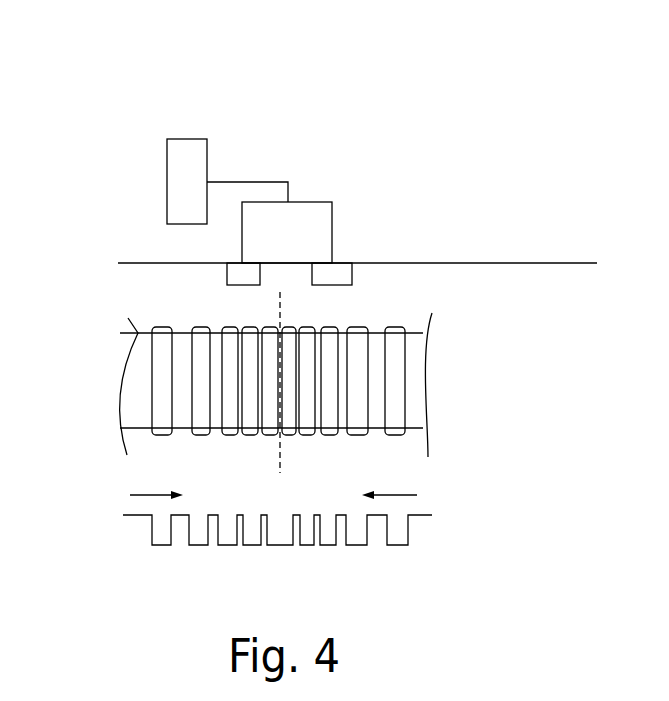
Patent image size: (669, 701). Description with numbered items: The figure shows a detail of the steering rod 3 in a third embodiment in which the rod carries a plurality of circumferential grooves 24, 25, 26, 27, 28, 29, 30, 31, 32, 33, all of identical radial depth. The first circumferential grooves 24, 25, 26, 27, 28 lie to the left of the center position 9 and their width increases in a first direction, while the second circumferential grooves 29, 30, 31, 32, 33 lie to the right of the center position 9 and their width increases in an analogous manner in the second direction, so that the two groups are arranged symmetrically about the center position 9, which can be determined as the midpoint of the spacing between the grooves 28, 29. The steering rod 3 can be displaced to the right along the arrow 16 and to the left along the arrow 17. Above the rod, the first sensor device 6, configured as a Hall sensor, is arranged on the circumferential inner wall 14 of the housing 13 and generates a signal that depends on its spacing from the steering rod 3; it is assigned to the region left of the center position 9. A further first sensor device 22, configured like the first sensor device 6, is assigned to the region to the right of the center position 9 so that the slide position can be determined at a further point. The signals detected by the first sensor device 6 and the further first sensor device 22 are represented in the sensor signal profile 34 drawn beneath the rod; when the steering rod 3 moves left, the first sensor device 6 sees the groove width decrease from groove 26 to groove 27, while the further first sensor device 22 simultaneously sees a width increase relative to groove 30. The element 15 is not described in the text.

The steering rod 3 is at (476, 138).
The first sensor device 6 is at (234, 260).
The center position 9 is at (280, 473).
The housing 13 is at (533, 263).
The circumferential inner wall 14 is at (563, 263).
The control unit 15 is at (185, 138).
The arrow 16 is at (155, 497).
The arrow 17 is at (400, 497).
The further first sensor device 22 is at (343, 263).
The first circumferential groove 24 is at (128, 318).
The first circumferential groove 25 is at (175, 332).
The first circumferential groove 26 is at (210, 332).
The further first circumferential groove 27 is at (237, 332).
The first circumferential groove 28 is at (260, 332).
The second circumferential groove 29 is at (300, 352).
The further second circumferential groove 30 is at (318, 362).
The second circumferential groove 31 is at (343, 372).
The second circumferential groove 32 is at (378, 388).
The second circumferential groove 33 is at (423, 418).
The sensor signal profile 34 is at (198, 562).